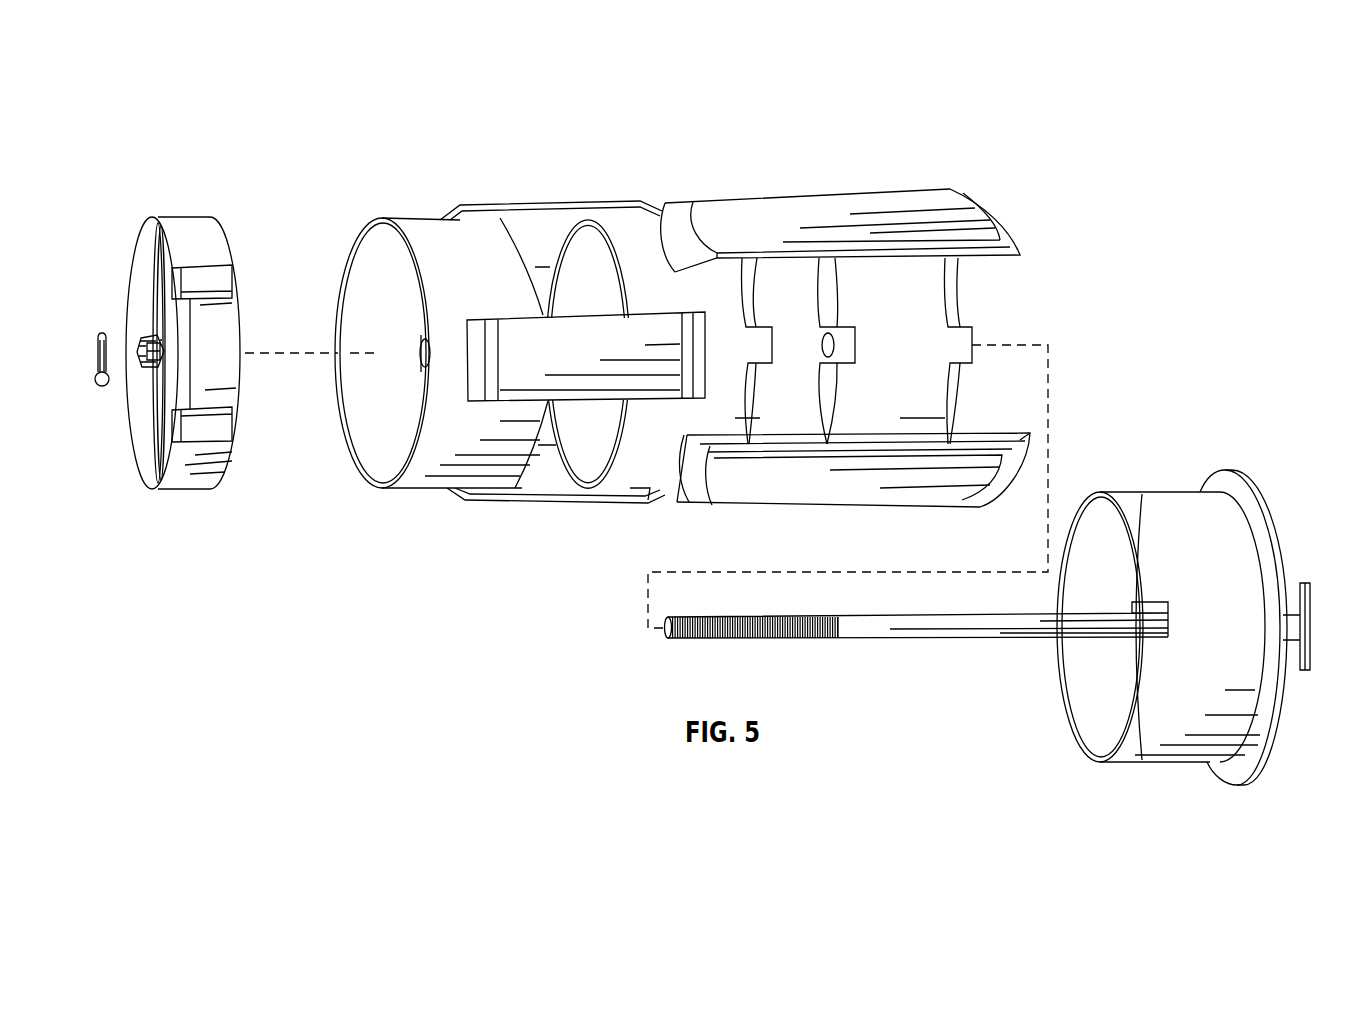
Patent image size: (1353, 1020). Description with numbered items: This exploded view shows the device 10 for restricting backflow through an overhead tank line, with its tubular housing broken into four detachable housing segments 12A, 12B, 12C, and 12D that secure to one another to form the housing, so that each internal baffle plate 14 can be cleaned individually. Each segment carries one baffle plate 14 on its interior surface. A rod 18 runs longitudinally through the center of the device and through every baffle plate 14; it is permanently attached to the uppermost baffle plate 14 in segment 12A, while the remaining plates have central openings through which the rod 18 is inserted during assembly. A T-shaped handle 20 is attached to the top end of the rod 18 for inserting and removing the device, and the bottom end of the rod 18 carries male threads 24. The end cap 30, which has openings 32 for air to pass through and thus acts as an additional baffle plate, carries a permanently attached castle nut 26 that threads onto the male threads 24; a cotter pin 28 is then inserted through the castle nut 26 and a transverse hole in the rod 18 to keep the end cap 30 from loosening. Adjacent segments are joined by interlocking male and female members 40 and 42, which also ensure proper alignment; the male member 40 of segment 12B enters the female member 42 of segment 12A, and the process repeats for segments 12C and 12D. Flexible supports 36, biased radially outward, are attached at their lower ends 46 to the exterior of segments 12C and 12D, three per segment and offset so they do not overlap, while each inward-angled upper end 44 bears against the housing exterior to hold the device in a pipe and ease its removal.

The device 10 is at (152, 133).
The housing segment 12A is at (1175, 505).
The housing segment 12B is at (902, 273).
The housing segment 12C is at (580, 219).
The housing segment 12D is at (415, 222).
The baffle plate 14 is at (423, 382).
The rod 18 is at (953, 630).
The handle 20 is at (1312, 660).
The male threads 24 is at (765, 638).
The castle nut 26 is at (141, 350).
The cotter pin 28 is at (103, 389).
The end cap 30 is at (145, 272).
The openings 32 is at (200, 281).
The flexible support 36 is at (535, 322).
The male member 40 is at (761, 337).
The female member 42 is at (846, 347).
The upper end 44 is at (1012, 217).
The lower end 46 is at (670, 225).